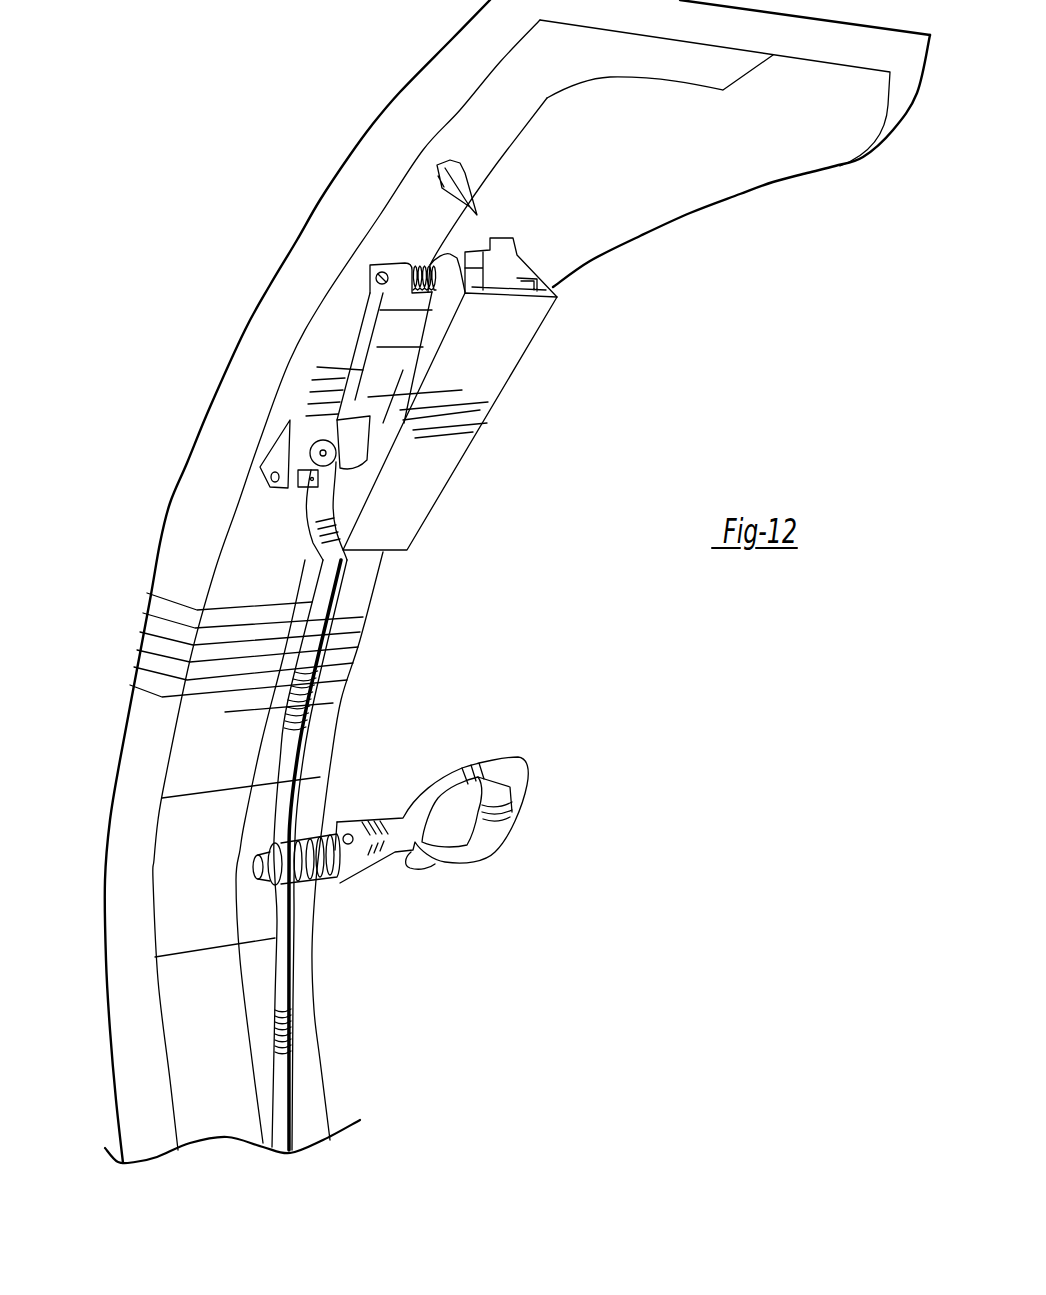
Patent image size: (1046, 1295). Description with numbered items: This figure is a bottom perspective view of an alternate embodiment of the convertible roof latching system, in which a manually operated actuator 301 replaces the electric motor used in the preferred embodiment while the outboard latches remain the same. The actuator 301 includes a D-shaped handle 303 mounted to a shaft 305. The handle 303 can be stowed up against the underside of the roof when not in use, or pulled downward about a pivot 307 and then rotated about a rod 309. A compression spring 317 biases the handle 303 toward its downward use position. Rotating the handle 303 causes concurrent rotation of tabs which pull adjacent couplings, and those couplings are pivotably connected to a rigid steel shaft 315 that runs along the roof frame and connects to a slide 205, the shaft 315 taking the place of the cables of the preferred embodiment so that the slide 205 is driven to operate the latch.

The slide 205 is at (483, 270).
The manually operated actuator 301 is at (395, 772).
The D-shaped handle 303 is at (507, 802).
The shaft 305 is at (360, 866).
The pivot 307 is at (350, 834).
The rod 309 is at (252, 865).
The rigid steel shaft 315 is at (308, 672).
The compression spring 317 is at (308, 882).